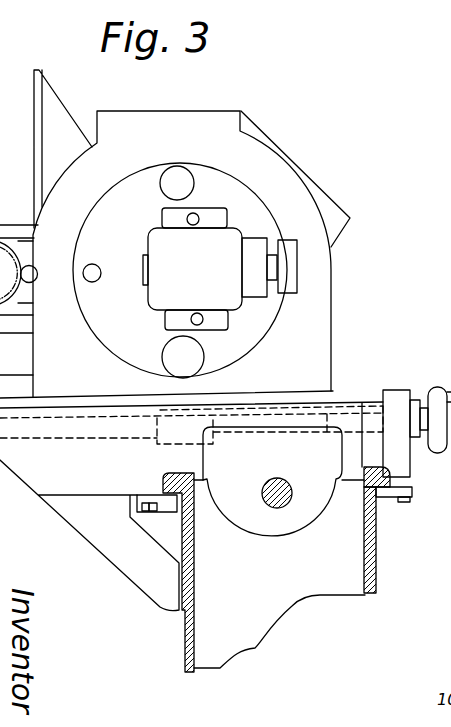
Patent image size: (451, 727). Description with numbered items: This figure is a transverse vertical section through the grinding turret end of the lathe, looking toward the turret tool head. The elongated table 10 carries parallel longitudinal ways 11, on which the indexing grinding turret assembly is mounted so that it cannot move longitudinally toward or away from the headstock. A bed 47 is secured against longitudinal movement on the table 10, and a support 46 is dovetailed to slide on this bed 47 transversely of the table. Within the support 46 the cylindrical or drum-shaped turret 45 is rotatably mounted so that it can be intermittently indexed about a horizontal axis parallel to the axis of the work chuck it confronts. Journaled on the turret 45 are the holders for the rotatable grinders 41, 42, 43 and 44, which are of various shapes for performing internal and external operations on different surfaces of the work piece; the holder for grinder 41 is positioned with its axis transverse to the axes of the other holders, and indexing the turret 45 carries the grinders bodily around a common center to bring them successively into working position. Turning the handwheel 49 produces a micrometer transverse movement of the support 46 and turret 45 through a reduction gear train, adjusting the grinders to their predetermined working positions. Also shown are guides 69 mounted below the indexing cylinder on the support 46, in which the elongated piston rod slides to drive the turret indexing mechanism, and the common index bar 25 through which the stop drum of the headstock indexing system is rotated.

The table 10 is at (353, 592).
The longitudinal ways 11 is at (169, 497).
The common index bar 25 is at (283, 508).
The grinder 41 is at (290, 293).
The grinder 42 is at (181, 167).
The grinder 43 is at (84, 267).
The grinder 44 is at (198, 372).
The turret 45 is at (111, 332).
The support 46 is at (320, 350).
The bed 47 is at (232, 525).
The handwheel 49 is at (438, 387).
The guides 69 is at (12, 223).